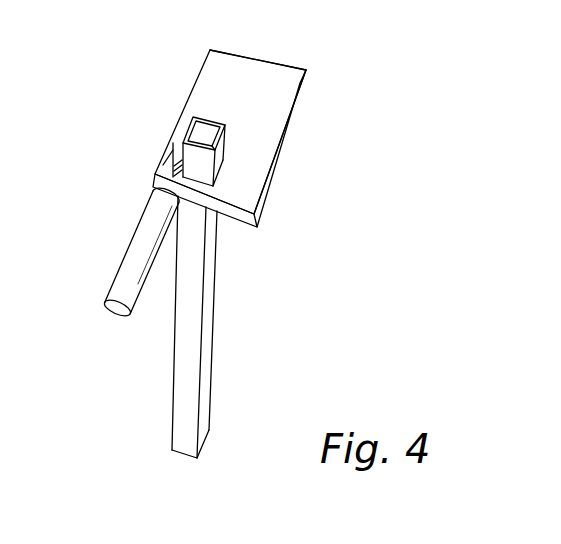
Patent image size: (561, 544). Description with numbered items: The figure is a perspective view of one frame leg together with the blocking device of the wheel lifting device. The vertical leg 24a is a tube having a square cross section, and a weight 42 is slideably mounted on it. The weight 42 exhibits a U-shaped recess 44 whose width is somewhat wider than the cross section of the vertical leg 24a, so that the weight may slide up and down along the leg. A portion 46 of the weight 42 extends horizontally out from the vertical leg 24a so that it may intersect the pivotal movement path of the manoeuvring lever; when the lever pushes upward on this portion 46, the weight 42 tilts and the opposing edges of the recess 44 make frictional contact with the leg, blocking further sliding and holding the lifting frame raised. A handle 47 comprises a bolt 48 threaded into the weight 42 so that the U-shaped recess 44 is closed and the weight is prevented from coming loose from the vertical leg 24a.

The weight 42 is at (293, 109).
The U-shaped recess 44 is at (230, 163).
The portion of the weight 46 is at (195, 66).
The handle 47 is at (141, 248).
The bolt 48 is at (172, 166).
The vertical leg 24a is at (210, 334).